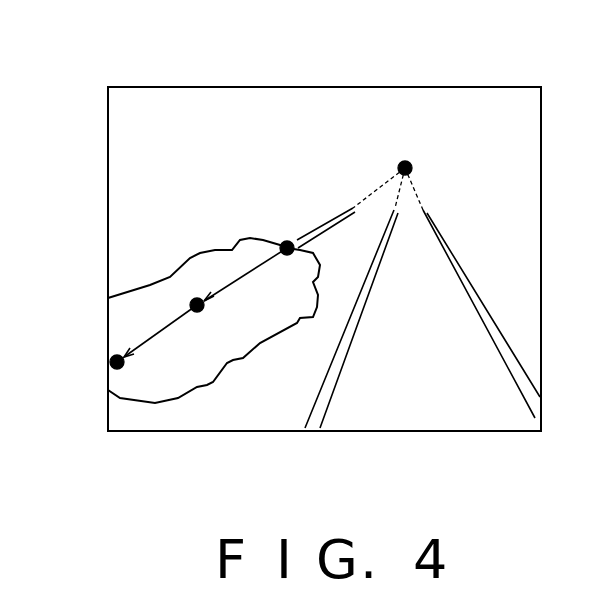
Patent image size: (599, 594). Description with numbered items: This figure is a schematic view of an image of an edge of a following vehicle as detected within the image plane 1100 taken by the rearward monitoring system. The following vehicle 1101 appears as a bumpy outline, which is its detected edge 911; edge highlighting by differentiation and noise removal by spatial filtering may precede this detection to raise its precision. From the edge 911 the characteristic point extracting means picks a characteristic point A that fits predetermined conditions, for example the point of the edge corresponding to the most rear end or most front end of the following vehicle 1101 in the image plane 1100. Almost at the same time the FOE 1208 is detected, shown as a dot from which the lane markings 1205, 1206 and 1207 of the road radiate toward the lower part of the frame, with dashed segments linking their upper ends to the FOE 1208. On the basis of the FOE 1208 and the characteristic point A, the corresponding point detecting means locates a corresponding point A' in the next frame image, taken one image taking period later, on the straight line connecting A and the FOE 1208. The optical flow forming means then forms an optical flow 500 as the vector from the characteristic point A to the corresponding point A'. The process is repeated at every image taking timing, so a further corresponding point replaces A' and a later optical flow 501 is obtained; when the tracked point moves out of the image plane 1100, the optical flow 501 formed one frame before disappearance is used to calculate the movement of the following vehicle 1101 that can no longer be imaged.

The image plane 1100 is at (230, 87).
The following vehicle 1101 is at (180, 224).
The edge 911 is at (215, 250).
The characteristic point A is at (320, 138).
The corresponding point A' is at (136, 271).
The optical flow 500 is at (247, 277).
The optical flow 501 is at (157, 333).
The FOE 1208 is at (406, 161).
The lane marking 1205 is at (446, 228).
The lane marking 1206 is at (350, 205).
The lane marking 1207 is at (357, 327).